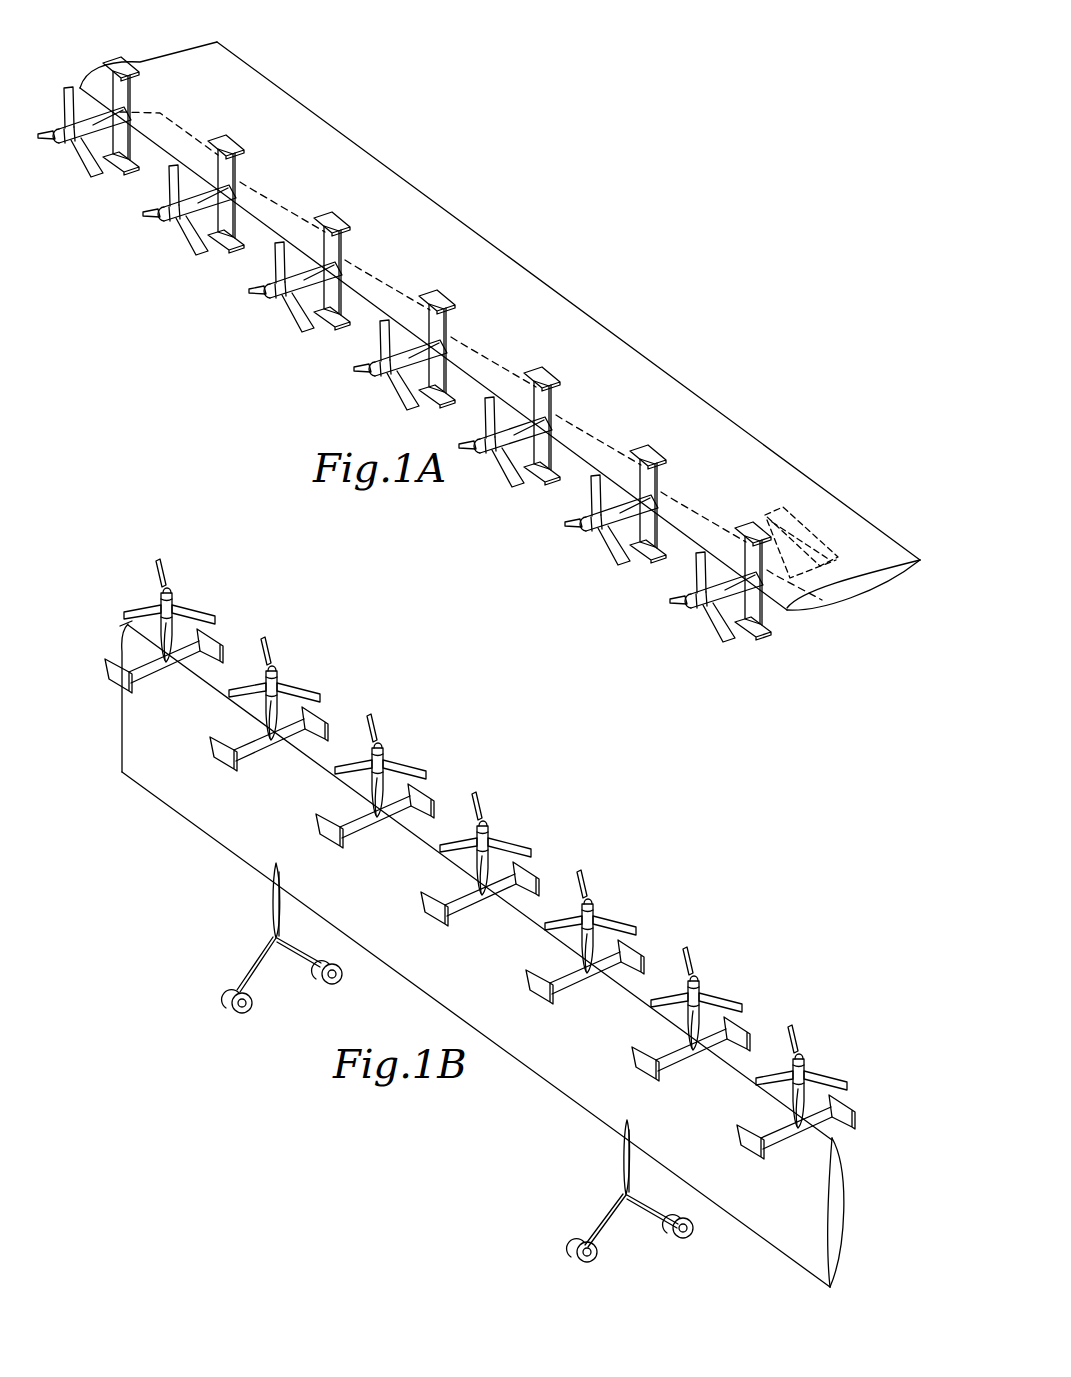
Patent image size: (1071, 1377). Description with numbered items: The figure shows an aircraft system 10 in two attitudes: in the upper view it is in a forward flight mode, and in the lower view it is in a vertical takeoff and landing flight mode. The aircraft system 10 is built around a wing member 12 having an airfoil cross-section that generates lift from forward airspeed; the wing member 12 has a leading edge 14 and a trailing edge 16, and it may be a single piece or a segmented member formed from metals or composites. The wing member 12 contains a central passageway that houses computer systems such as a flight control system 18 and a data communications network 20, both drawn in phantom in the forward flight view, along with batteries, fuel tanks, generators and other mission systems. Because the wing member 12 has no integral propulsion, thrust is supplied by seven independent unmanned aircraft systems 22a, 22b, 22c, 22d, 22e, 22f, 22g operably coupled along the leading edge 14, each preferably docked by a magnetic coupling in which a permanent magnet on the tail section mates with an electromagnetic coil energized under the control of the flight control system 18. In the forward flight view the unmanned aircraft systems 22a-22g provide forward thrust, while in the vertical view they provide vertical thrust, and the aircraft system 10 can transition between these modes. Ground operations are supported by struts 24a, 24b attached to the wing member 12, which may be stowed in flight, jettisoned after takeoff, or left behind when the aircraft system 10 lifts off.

In FIG. 1A, the aircraft system 10 is at (583, 276).
In FIG. 1B, the aircraft system 10 is at (577, 856).
In FIG. 1A, the wing member 12 is at (500, 262).
In FIG. 1B, the wing member 12 is at (222, 828).
In FIG. 1A, the leading edge 14 is at (383, 312).
In FIG. 1B, the leading edge 14 is at (427, 840).
In FIG. 1A, the trailing edge 16 is at (433, 201).
In FIG. 1B, the trailing edge 16 is at (532, 1072).
In FIG. 1A, the flight control system 18 is at (797, 512).
In FIG. 1A, the data communications network 20 is at (603, 435).
In FIG. 1A, the unmanned aircraft system 22a is at (719, 589).
In FIG. 1B, the unmanned aircraft system 22a is at (811, 1087).
In FIG. 1A, the unmanned aircraft system 22b is at (614, 512).
In FIG. 1B, the unmanned aircraft system 22b is at (706, 1009).
In FIG. 1A, the unmanned aircraft system 22c is at (508, 434).
In FIG. 1B, the unmanned aircraft system 22c is at (599, 932).
In FIG. 1A, the unmanned aircraft system 22d is at (403, 357).
In FIG. 1B, the unmanned aircraft system 22d is at (495, 854).
In FIG. 1A, the unmanned aircraft system 22e is at (298, 279).
In FIG. 1B, the unmanned aircraft system 22e is at (390, 776).
In FIG. 1A, the unmanned aircraft system 22f is at (192, 202).
In FIG. 1B, the unmanned aircraft system 22f is at (282, 699).
In FIG. 1A, the unmanned aircraft system 22g is at (87, 124).
In FIG. 1B, the unmanned aircraft system 22g is at (179, 621).
In FIG. 1B, the strut 24a is at (624, 1172).
In FIG. 1B, the strut 24b is at (273, 909).